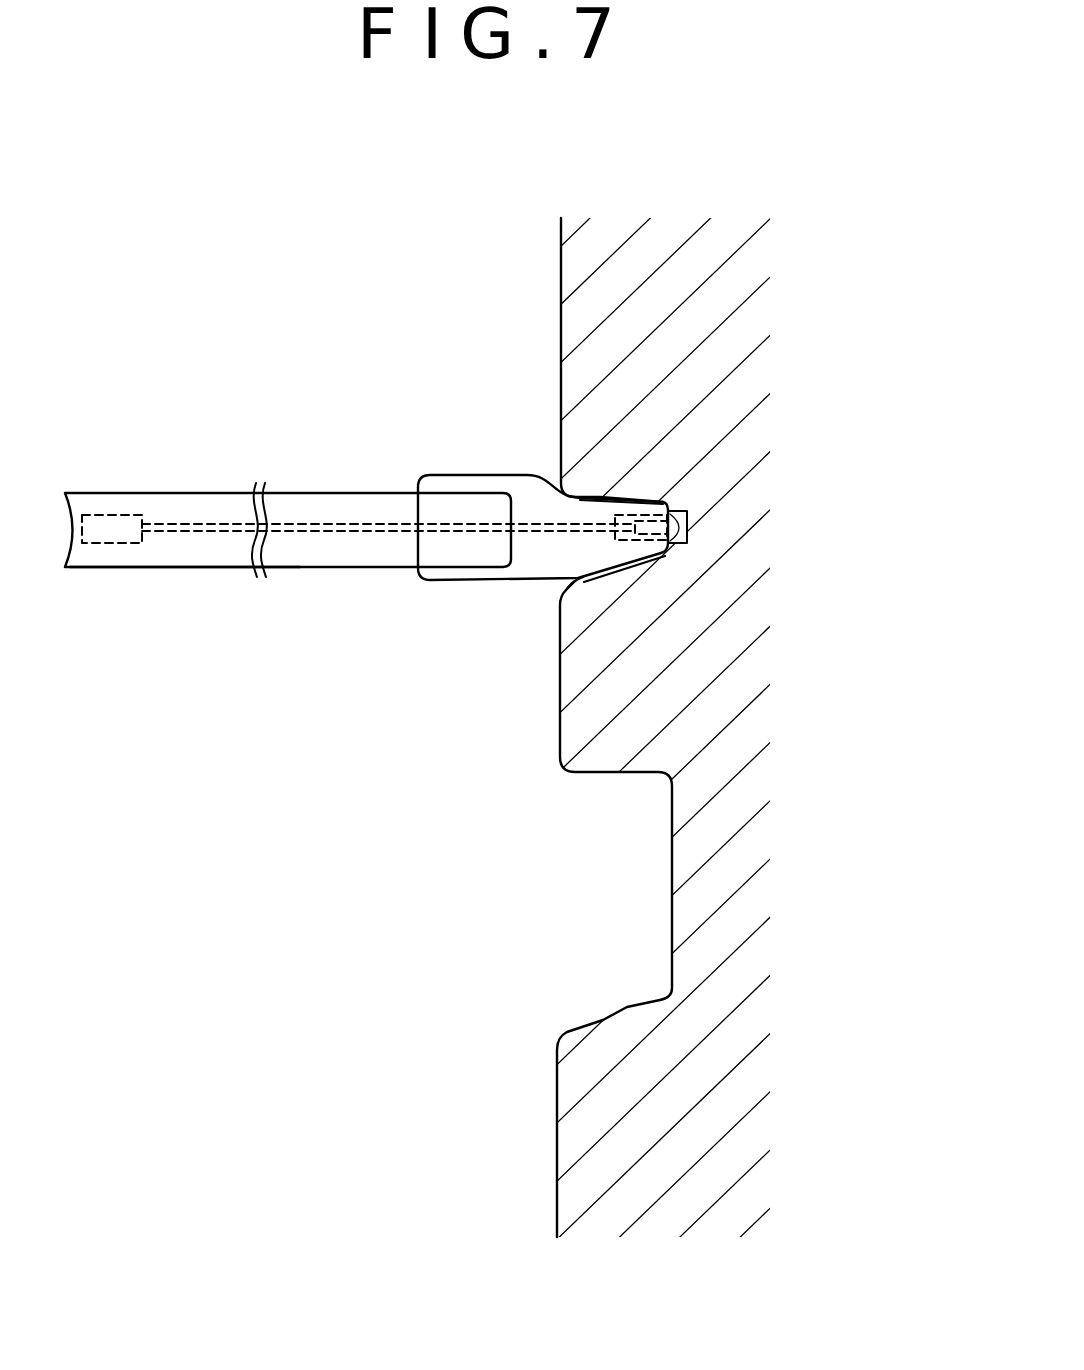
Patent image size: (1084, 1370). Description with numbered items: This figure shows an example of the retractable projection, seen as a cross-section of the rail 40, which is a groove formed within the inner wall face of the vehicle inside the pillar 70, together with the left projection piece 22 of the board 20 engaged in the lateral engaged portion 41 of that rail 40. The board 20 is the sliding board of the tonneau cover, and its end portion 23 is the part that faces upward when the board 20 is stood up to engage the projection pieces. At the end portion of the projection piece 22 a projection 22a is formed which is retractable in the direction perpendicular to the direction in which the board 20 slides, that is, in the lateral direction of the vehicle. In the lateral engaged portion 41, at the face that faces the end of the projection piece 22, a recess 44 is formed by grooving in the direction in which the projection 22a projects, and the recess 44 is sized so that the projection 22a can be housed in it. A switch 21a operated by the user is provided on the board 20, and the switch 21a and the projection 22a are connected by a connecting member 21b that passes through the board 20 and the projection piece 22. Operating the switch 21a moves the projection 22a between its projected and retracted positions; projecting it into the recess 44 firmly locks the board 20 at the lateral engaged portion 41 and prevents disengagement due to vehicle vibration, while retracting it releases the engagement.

The board 20 is at (312, 492).
The switch 21a is at (103, 515).
The connecting member 21b is at (184, 523).
The projection piece 22 is at (443, 483).
The projection 22a is at (668, 530).
The end portion 23 is at (185, 568).
The rail 40 is at (627, 1007).
The lateral engaged portion 41 is at (615, 520).
The recess 44 is at (672, 506).
The pillar 70 is at (558, 278).